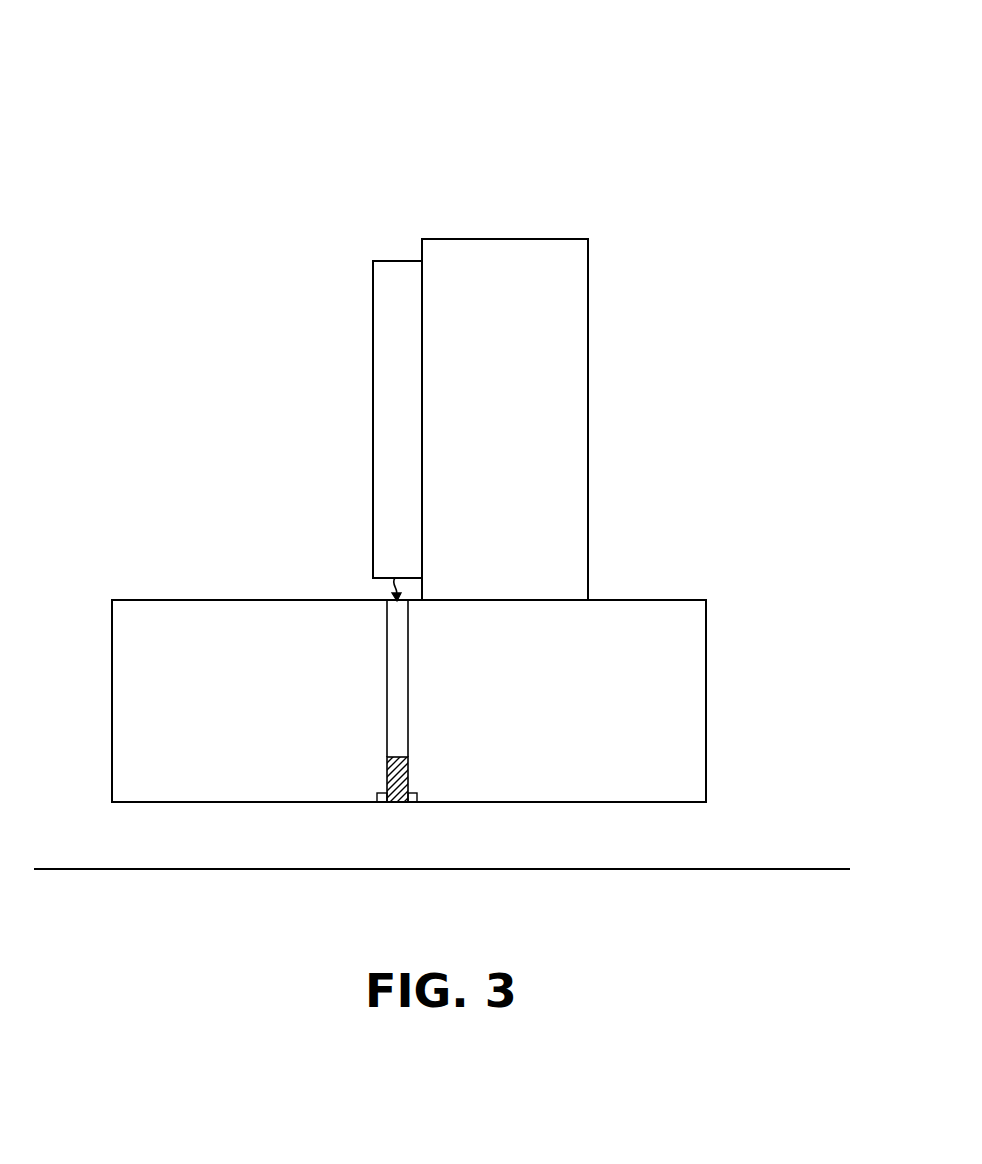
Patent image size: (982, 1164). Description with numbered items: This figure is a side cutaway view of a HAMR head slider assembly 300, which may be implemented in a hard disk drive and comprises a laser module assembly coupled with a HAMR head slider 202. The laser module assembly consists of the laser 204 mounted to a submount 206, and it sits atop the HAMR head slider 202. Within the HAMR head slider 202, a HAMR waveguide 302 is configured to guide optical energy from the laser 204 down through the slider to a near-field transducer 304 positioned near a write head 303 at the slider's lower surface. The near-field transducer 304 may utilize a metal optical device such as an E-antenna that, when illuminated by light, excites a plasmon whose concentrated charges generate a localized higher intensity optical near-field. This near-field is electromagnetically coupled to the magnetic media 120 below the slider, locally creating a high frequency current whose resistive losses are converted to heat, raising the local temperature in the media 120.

The HAMR head slider assembly 300 is at (348, 60).
The submount 206 is at (553, 279).
The laser 204 is at (384, 404).
The HAMR head slider 202 is at (682, 635).
The HAMR waveguide 302 is at (394, 640).
The near-field transducer 304 is at (383, 793).
The write head 303 is at (397, 804).
The magnetic media 120 is at (801, 870).